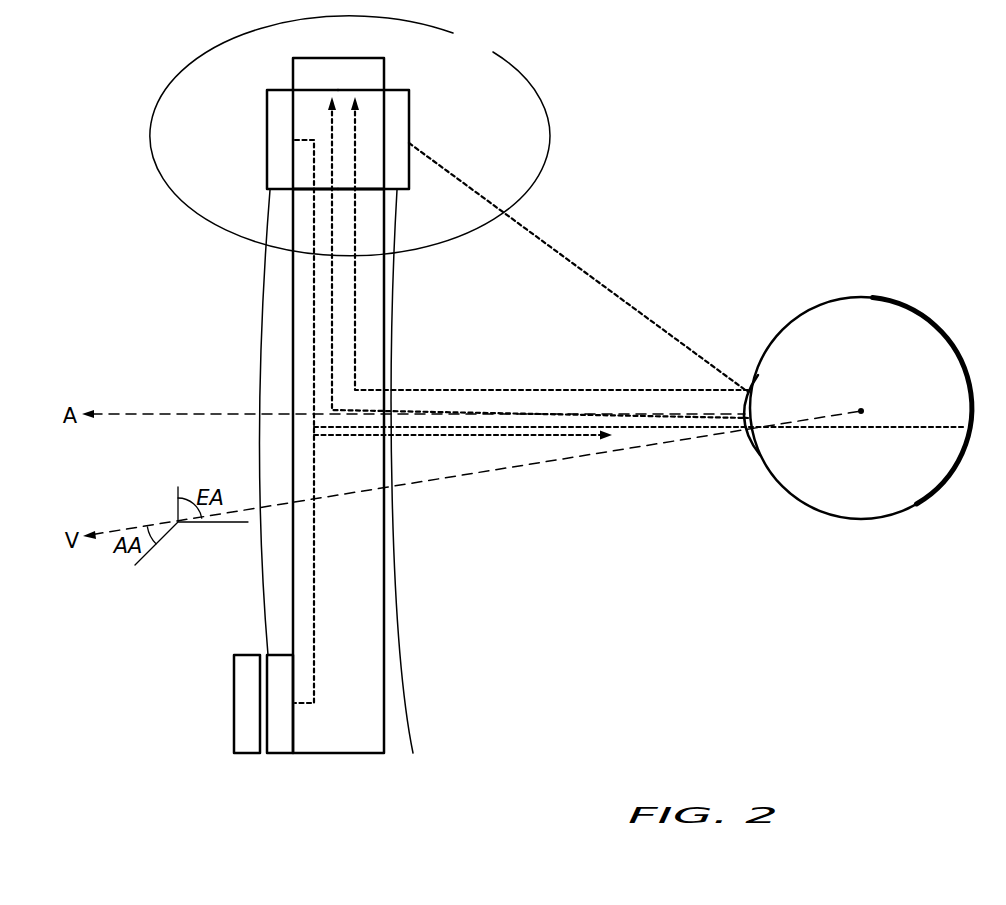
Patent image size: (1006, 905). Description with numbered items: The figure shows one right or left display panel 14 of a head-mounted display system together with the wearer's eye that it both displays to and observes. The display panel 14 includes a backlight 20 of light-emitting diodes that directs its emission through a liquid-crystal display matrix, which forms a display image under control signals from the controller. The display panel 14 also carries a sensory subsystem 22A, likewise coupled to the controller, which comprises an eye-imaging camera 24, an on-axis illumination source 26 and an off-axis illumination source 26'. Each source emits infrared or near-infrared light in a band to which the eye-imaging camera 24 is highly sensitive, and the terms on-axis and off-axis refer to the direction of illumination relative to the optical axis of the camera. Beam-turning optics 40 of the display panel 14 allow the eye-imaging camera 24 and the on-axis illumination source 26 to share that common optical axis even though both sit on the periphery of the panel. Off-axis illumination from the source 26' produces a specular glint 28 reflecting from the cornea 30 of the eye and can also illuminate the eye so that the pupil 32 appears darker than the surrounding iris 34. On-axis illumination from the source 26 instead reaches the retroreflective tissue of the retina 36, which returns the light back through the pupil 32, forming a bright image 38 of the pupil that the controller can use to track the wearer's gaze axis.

The display panel 14 is at (480, 698).
The backlight 20 is at (234, 704).
The sensory subsystem 22A is at (350, 136).
The eye-imaging camera 24 is at (351, 85).
The on-axis illumination source 26 is at (257, 139).
The off-axis illumination source 26' is at (420, 139).
The specular glint 28 is at (483, 390).
The cornea 30 is at (757, 445).
The pupil 32 is at (772, 410).
The iris 34 is at (750, 436).
The retina 36 is at (917, 318).
The bright image of the pupil 38 is at (428, 412).
The beam-turning optics 40 is at (351, 740).